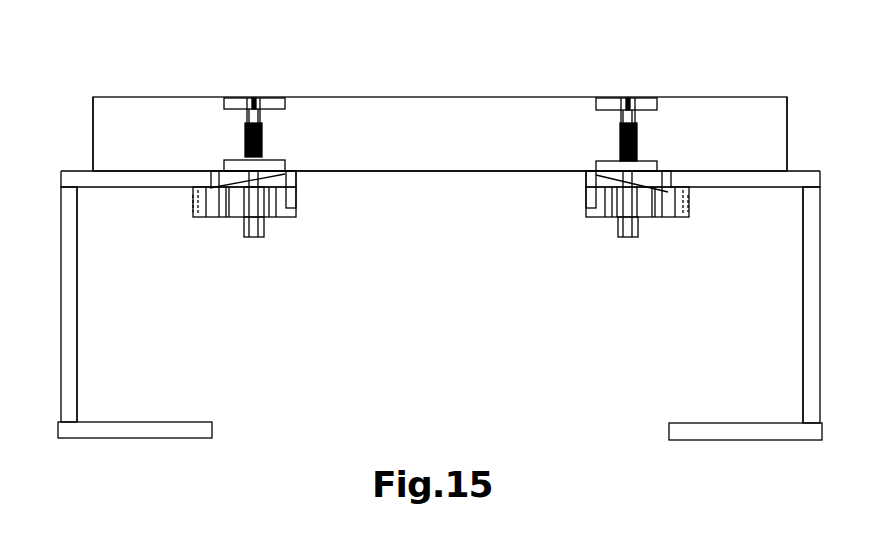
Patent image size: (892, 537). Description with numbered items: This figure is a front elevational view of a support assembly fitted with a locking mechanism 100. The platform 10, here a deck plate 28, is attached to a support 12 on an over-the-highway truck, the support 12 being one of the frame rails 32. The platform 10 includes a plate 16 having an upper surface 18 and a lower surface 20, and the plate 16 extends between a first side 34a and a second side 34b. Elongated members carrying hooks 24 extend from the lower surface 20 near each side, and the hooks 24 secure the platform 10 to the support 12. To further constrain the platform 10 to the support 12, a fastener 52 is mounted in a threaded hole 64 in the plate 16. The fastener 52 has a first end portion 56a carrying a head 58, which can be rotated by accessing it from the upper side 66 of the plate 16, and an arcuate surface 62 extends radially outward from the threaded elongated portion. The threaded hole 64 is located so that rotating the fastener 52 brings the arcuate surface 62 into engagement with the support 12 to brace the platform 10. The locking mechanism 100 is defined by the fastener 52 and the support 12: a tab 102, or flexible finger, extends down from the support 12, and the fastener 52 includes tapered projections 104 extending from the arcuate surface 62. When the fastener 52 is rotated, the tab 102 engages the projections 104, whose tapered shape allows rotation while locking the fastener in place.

The platform 10 is at (435, 57).
The support 12 is at (72, 152).
The plate 16 is at (170, 125).
The upper surface 18 is at (348, 97).
The lower surface 20 is at (397, 173).
The hooks 24 is at (191, 216).
The deck plate 28 is at (424, 113).
The frame rails 32 is at (68, 278).
The first side 34a is at (92, 128).
The second side 34b is at (788, 133).
The fastener 52 is at (268, 257).
The first end portion 56a is at (253, 100).
The head 58 is at (625, 100).
The arcuate surface 62 is at (262, 207).
The threaded hole 64 is at (263, 133).
The upper side 66 is at (513, 67).
The locking mechanism 100 is at (269, 240).
The tab 102 is at (292, 187).
The projections 104 is at (246, 208).